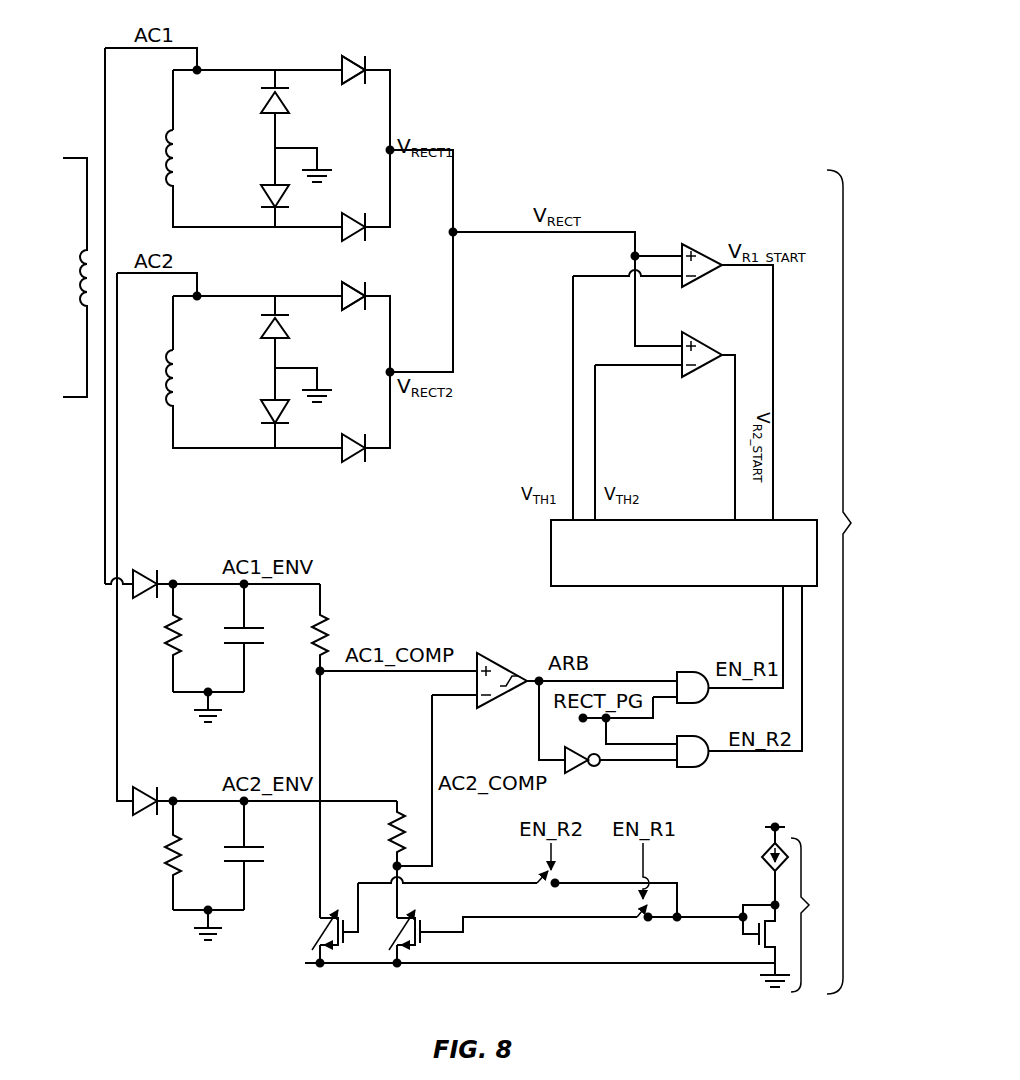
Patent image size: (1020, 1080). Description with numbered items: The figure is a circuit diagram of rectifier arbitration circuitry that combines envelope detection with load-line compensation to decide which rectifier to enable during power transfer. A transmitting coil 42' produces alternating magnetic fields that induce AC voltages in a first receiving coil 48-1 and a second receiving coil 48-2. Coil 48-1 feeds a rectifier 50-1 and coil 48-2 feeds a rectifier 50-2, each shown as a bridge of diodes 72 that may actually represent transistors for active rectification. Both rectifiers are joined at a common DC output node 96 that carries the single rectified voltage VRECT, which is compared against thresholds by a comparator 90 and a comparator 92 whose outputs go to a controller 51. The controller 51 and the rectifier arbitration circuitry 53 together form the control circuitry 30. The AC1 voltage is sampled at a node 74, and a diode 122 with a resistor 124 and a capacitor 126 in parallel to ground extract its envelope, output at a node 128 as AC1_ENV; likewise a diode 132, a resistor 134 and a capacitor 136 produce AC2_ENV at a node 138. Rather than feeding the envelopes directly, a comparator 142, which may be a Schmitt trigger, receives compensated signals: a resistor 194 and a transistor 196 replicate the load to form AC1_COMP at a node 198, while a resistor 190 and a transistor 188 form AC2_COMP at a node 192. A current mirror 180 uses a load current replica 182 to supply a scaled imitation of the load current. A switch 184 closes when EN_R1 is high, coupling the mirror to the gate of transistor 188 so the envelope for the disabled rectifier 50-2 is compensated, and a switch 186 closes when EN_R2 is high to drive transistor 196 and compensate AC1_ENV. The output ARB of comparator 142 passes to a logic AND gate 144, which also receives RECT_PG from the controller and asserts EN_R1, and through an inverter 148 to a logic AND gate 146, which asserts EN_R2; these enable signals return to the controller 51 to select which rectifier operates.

The transmitting coil 42' is at (54, 277).
The rectifier 50-1 is at (392, 54).
The rectifier 50-2 is at (385, 282).
The first receiving coil 48-1 is at (190, 160).
The second receiving coil 48-2 is at (190, 380).
The node 74 is at (200, 82).
The diode 72 is at (336, 82).
The common DC output node 96 is at (464, 240).
The rectifier arbitration circuitry 53 is at (684, 176).
The comparator 90 is at (705, 244).
The comparator 92 is at (703, 380).
The controller 51 is at (551, 560).
The control circuitry 30 is at (851, 582).
The diode 122 is at (146, 568).
The resistor 124 is at (190, 640).
The capacitor 126 is at (278, 642).
The node 128 is at (255, 593).
The resistor 194 is at (337, 622).
The node 198 is at (330, 680).
The comparator 142 is at (509, 662).
The logic AND gate 144 is at (680, 664).
The logic AND gate 146 is at (702, 776).
The inverter 148 is at (594, 775).
The diode 132 is at (146, 785).
The resistor 134 is at (190, 858).
The capacitor 136 is at (278, 860).
The node 138 is at (255, 810).
The resistor 190 is at (383, 836).
The node 192 is at (388, 862).
The transistor 196 is at (307, 940).
The transistor 188 is at (385, 940).
The switch 186 is at (545, 898).
The switch 184 is at (635, 930).
The load current replica 182 is at (758, 868).
The current mirror 180 is at (792, 915).